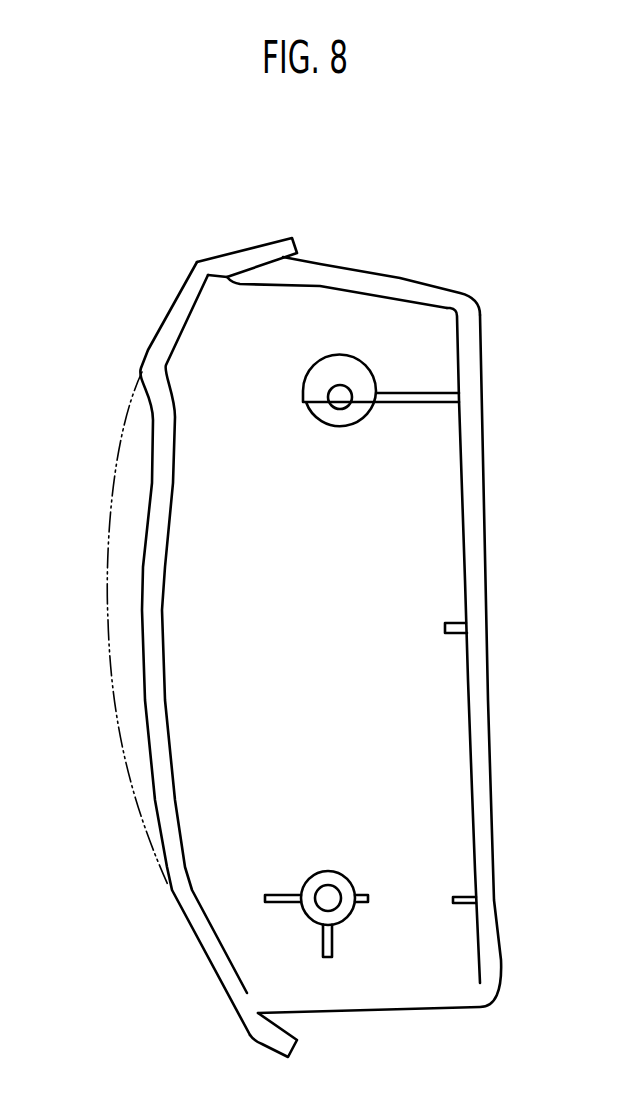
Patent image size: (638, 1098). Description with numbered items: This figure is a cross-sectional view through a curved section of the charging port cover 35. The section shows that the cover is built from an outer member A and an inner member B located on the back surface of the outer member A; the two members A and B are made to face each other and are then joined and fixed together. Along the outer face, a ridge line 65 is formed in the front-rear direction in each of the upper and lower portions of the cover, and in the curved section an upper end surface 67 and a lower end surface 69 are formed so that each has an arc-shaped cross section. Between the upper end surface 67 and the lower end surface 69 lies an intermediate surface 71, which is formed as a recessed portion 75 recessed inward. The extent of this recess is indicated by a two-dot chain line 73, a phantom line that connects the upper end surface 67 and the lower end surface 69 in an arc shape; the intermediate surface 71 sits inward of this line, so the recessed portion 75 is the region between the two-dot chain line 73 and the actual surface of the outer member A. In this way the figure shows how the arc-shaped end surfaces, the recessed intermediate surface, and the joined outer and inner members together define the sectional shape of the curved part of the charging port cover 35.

The charging port cover 35 is at (420, 236).
The ridge line 65 is at (140, 377).
The upper end surface 67 is at (167, 310).
The lower end surface 69 is at (207, 963).
The intermediate surface 71 is at (212, 634).
The recessed portion 75 is at (145, 578).
The two-dot chain line 73 is at (108, 612).
The outer member A is at (188, 911).
The inner member B is at (478, 792).